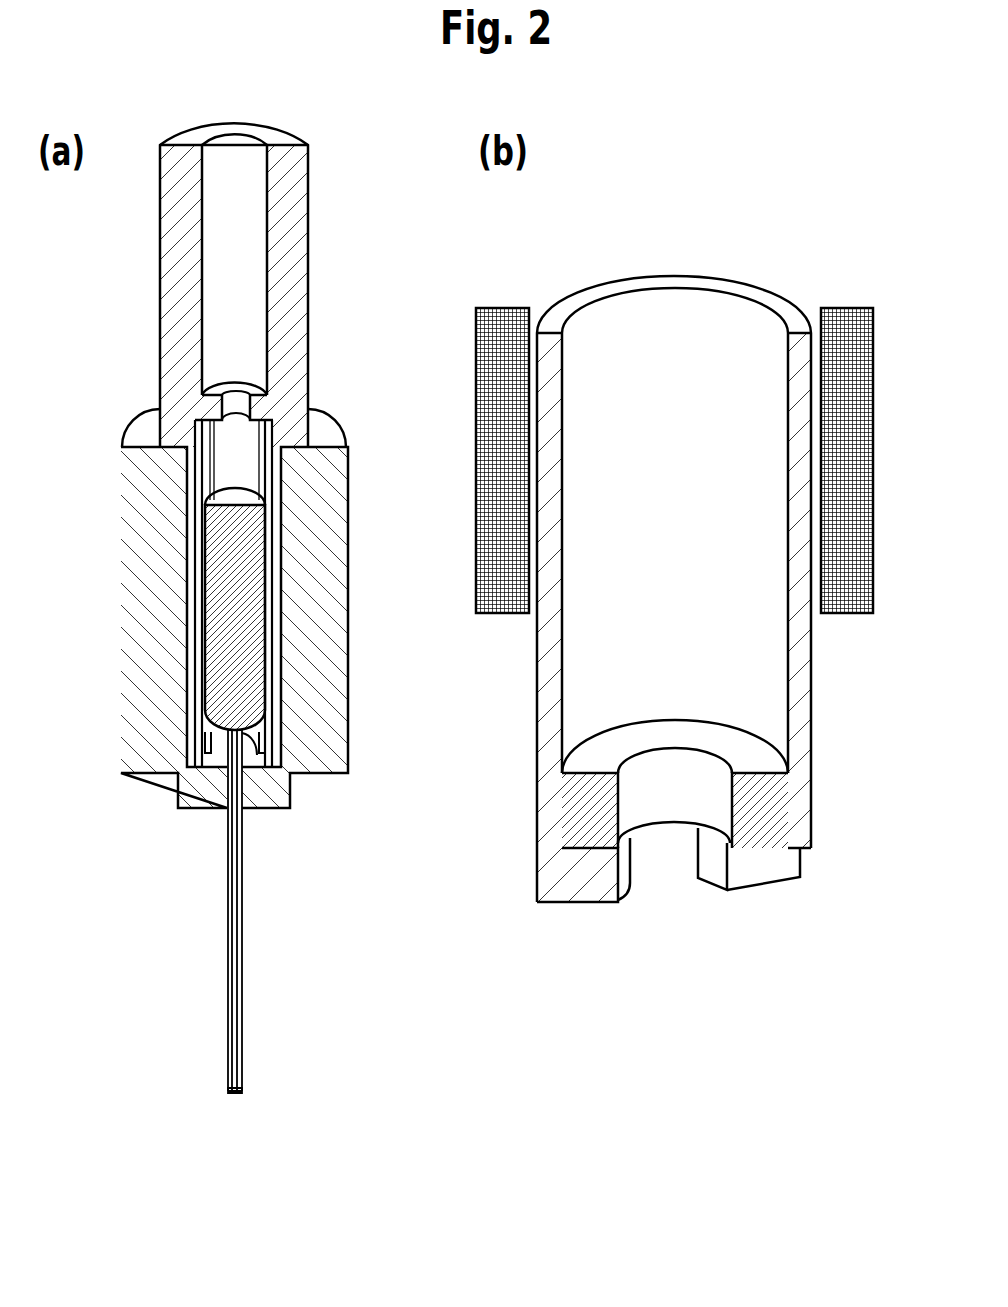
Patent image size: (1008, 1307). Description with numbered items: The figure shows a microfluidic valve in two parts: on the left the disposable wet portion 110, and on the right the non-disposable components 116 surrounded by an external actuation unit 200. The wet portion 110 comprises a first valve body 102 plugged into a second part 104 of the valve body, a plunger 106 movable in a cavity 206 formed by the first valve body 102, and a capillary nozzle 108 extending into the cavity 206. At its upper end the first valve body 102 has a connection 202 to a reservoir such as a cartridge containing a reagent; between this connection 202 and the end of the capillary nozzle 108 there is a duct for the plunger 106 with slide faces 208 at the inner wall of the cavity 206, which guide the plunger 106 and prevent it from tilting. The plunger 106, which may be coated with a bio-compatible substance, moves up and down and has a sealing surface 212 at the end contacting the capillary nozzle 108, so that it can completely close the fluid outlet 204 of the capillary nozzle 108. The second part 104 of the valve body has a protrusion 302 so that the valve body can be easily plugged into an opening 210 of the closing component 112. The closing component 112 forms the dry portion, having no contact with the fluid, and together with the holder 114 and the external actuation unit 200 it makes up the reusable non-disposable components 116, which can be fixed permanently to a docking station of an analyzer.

The wet portion 110 is at (236, 422).
The first valve body 102 is at (302, 335).
The connection 202 is at (215, 273).
The cavity 206 is at (220, 458).
The second part of the valve body 104 is at (152, 545).
The plunger 106 is at (220, 672).
The slide faces 208 is at (210, 740).
The sealing surface 212 is at (250, 757).
The protrusion 302 is at (210, 800).
The capillary nozzle 108 is at (228, 940).
The fluid outlet 204 is at (234, 1092).
The non-disposable components 116 is at (704, 550).
The holder 114 is at (807, 732).
The closing component 112 is at (765, 830).
The opening 210 is at (663, 805).
The external actuation unit 200 is at (500, 605).